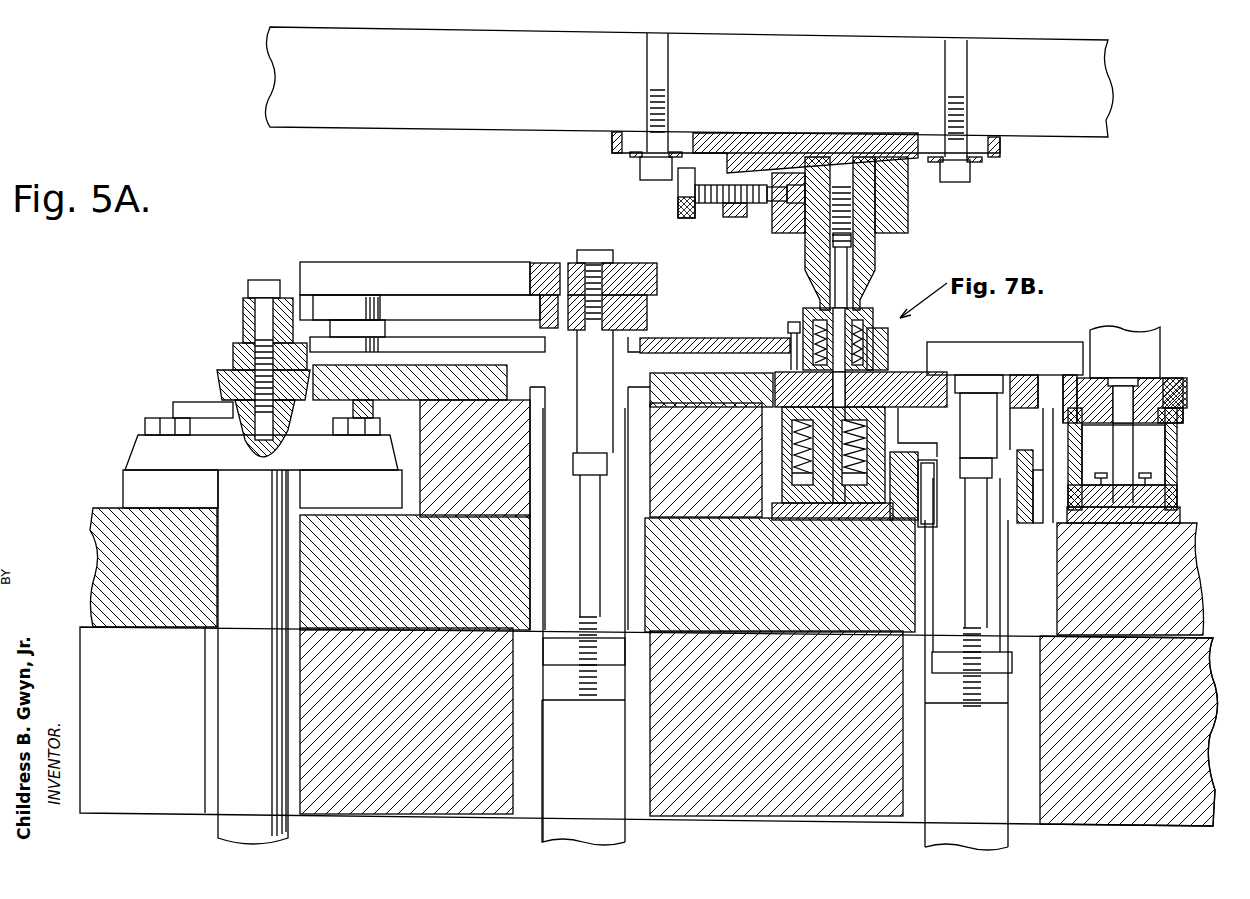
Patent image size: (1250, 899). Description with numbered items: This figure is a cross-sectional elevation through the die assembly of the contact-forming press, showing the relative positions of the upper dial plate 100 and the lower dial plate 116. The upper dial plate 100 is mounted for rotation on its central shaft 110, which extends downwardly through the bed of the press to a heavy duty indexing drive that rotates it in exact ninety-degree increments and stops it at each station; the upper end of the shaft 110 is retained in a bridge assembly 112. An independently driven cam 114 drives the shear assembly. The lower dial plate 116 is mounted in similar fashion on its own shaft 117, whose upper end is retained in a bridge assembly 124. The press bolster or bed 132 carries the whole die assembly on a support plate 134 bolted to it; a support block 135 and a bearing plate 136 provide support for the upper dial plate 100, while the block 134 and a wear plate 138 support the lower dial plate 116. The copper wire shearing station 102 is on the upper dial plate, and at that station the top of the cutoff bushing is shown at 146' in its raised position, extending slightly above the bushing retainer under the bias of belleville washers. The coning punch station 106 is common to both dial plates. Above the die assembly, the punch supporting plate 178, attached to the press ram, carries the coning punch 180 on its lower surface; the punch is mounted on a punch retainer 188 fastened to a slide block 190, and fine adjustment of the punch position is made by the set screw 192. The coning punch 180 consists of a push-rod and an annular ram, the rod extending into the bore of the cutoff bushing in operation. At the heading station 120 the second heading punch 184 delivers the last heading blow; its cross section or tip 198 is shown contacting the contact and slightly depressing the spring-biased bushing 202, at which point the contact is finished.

The upper dial plate 100 is at (722, 320).
The copper wire shearing station 102 is at (320, 295).
The coning punch station 106 is at (796, 296).
The central shaft 110 is at (630, 560).
The bridge assembly 112 is at (490, 262).
The cam 114 is at (243, 313).
The lower dial plate 116 is at (905, 372).
The shaft 117 is at (1015, 632).
The heading station 120 is at (1177, 340).
The bridge assembly 124 is at (1058, 342).
The press bolster or bed 132 is at (1110, 822).
The support plate 134 is at (1202, 542).
The support block 135 is at (490, 472).
The bearing plate 136 is at (440, 365).
The wear plate 138 is at (1178, 507).
The raised cutoff bushing top 146' is at (371, 286).
The punch supporting plate 178 is at (905, 37).
The coning punch 180 is at (875, 260).
The second heading punch 184 is at (1115, 327).
The punch retainer 188 is at (908, 215).
The slide block 190 is at (835, 132).
The set screw 192 is at (678, 191).
The tip of punch 184 198 is at (1180, 386).
The spring-biased bushing 202 is at (1175, 414).